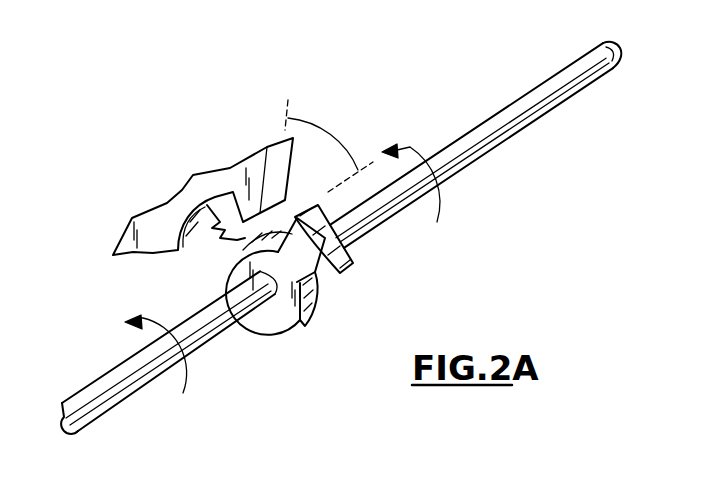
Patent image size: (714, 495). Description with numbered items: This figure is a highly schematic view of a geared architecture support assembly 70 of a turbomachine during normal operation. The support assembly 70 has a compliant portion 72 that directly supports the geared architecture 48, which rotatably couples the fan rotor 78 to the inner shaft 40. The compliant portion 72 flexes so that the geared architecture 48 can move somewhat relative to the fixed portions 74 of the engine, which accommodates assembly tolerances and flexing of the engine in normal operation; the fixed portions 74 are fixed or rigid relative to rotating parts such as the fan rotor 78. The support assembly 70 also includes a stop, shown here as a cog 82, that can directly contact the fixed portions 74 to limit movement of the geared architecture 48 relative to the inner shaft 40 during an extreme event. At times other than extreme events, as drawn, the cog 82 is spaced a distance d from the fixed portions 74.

The inner shaft 40 is at (536, 104).
The geared architecture 48 is at (277, 321).
The geared architecture support assembly 70 is at (335, 120).
The compliant portion 72 is at (208, 257).
The fixed portions 74 is at (203, 188).
The fan rotor 78 is at (115, 385).
The cog 82 is at (358, 253).
The distance d is at (342, 138).